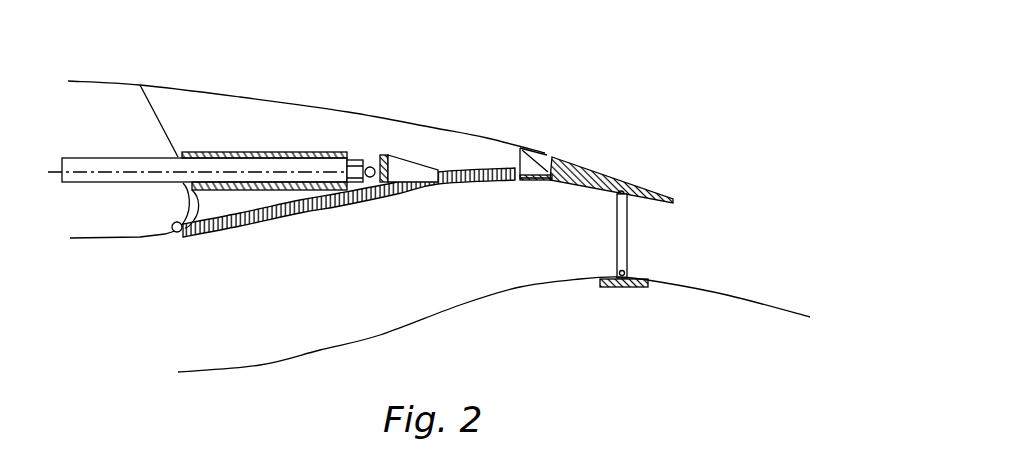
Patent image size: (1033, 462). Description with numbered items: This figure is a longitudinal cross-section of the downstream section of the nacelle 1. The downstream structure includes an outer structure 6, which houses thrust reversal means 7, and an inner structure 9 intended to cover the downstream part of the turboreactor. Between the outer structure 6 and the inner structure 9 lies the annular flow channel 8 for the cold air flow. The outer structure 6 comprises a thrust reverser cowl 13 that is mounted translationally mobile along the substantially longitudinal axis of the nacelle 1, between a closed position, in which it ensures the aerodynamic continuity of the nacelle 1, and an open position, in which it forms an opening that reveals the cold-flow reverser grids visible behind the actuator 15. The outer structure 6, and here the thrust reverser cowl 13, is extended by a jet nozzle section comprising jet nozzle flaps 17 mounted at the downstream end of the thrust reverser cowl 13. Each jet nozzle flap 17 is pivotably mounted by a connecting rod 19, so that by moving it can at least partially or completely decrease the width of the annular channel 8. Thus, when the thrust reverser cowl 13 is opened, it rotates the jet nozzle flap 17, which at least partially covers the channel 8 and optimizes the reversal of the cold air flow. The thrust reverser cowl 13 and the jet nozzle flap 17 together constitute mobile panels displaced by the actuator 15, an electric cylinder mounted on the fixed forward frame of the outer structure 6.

The nacelle 1 is at (306, 62).
The outer structure 6 is at (350, 110).
The thrust reversal means 7 is at (105, 105).
The annular flow channel 8 is at (365, 315).
The inner structure 9 is at (507, 297).
The thrust reverser cowl 13 is at (435, 129).
The actuator 15 is at (223, 165).
The jet nozzle flap 17 is at (597, 171).
The connecting rod 19 is at (623, 235).